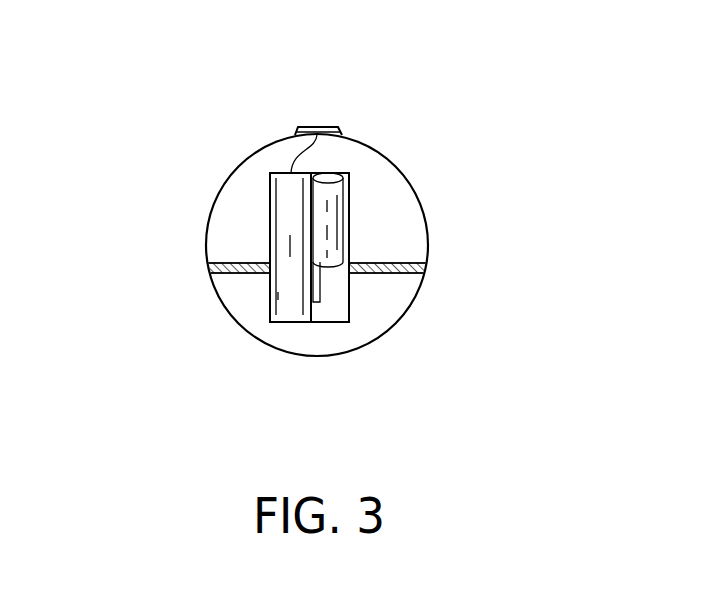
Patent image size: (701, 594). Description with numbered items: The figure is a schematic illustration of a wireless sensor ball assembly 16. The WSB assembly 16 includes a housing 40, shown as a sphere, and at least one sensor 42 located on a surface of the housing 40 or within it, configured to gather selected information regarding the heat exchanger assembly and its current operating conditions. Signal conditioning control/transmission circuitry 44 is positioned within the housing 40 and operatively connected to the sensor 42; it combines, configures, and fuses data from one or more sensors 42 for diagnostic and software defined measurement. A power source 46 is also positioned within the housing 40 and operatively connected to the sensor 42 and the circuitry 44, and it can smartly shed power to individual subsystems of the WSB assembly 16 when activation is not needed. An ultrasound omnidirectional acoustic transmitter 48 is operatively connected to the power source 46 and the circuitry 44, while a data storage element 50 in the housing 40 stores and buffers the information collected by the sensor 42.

The wireless sensor ball assembly 16 is at (188, 307).
The housing 40 is at (211, 214).
The sensor 42 is at (317, 127).
The signal conditioning control/transmission circuitry 44 is at (283, 310).
The power source 46 is at (320, 287).
The ultrasound omnidirectional acoustic transmitter 48 is at (428, 266).
The data storage element 50 is at (333, 217).